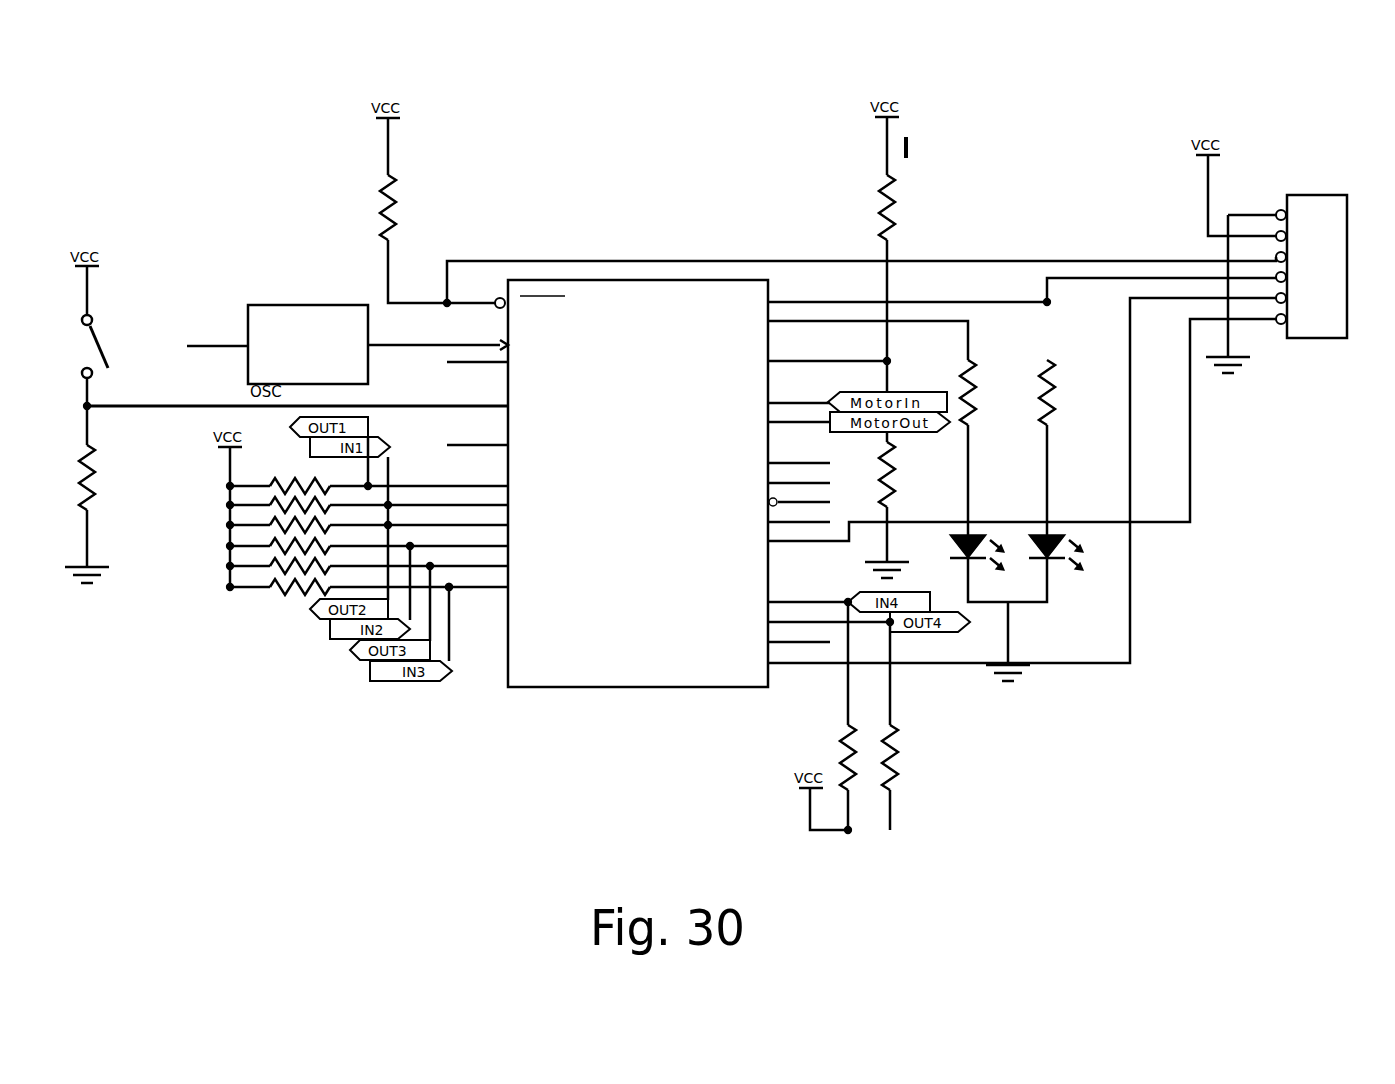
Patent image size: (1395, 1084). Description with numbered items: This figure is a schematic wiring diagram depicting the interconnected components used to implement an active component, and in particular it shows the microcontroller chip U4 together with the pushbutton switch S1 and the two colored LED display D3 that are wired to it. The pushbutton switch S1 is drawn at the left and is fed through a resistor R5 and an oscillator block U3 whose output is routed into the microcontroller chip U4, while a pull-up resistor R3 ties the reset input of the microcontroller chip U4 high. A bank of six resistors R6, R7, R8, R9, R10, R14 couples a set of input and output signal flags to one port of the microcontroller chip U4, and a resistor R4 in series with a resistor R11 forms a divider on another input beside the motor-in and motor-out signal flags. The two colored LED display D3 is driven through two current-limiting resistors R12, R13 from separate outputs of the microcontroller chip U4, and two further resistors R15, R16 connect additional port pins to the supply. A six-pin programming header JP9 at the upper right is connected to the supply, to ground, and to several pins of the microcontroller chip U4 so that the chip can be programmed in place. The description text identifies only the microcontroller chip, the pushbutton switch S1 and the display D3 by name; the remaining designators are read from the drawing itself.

The pushbutton switch S1 is at (130, 336).
The resistor 5.6k R5 is at (103, 486).
The oscillator U3 is at (347, 334).
The resistor 15k R3 is at (413, 210).
The microcontroller U4 is at (642, 474).
The resistor 220k R6 is at (368, 481).
The resistor 220k R7 is at (368, 500).
The resistor 220k R8 is at (368, 520).
The resistor 220k R9 is at (368, 541).
The resistor 220k R10 is at (368, 561).
The resistor 220k R14 is at (368, 582).
The resistor 2.2k 1% R4 is at (916, 254).
The resistor 2.0k 1% R11 is at (916, 497).
The resistor 100 R12 is at (983, 392).
The resistor 100 R13 is at (1062, 392).
The two colored LED display D3 is at (1077, 545).
The resistor 220k R15 is at (866, 757).
The resistor 220k R16 is at (908, 757).
The programming header JP9 is at (1324, 249).